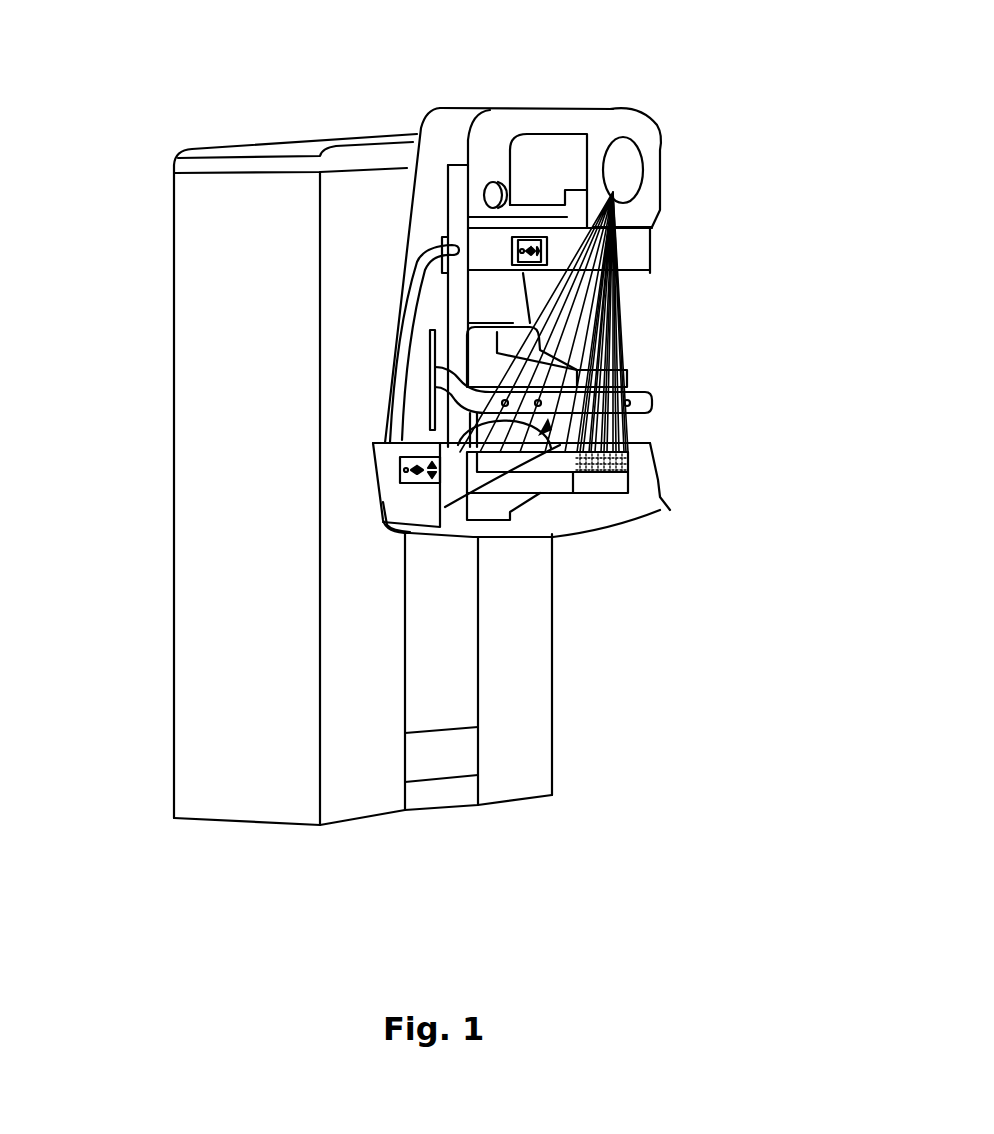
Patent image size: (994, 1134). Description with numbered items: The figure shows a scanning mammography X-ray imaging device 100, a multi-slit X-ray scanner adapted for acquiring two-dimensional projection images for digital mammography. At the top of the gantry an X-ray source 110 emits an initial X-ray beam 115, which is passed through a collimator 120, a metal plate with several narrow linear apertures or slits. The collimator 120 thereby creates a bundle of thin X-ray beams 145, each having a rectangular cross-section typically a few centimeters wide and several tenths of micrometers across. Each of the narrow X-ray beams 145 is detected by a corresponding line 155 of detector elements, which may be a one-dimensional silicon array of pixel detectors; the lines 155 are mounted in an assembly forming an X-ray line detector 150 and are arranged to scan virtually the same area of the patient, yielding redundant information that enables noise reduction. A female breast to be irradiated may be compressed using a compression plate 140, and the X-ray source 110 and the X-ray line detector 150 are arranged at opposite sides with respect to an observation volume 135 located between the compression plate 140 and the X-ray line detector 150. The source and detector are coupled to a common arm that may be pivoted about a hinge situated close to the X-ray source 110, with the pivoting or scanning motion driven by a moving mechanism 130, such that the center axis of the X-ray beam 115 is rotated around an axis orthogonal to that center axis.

The scanning mammography X-ray imaging device 100 is at (542, 105).
The X-ray source 110 is at (632, 166).
The initial X-ray beam 115 is at (620, 307).
The collimator 120 is at (636, 372).
The moving mechanism 130 is at (620, 517).
The observation volume 135 is at (427, 502).
The compression plate 140 is at (650, 402).
The thin X-ray beams 145 is at (625, 430).
The X-ray line detector 150 is at (645, 495).
The line of detector elements 155 is at (627, 467).